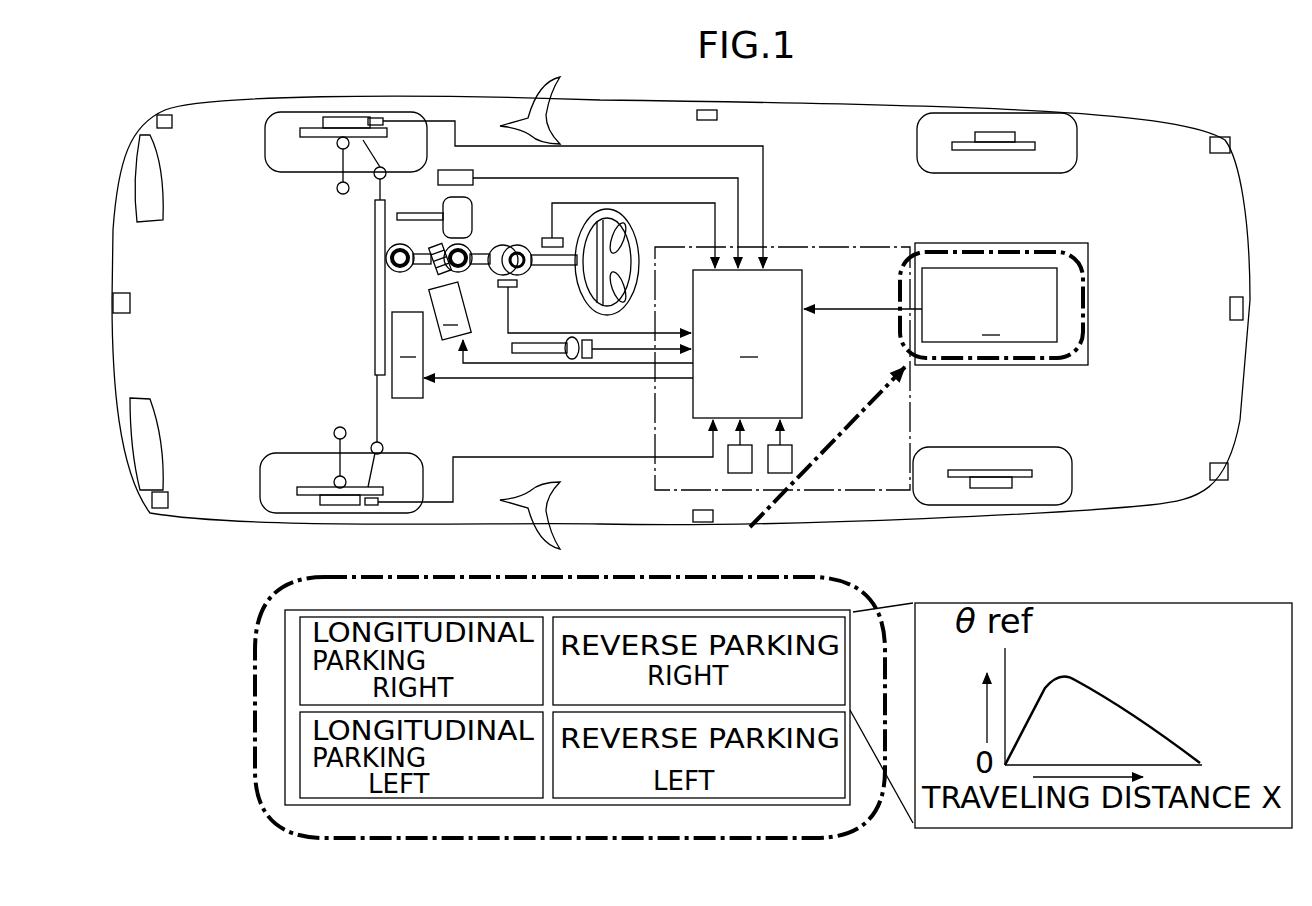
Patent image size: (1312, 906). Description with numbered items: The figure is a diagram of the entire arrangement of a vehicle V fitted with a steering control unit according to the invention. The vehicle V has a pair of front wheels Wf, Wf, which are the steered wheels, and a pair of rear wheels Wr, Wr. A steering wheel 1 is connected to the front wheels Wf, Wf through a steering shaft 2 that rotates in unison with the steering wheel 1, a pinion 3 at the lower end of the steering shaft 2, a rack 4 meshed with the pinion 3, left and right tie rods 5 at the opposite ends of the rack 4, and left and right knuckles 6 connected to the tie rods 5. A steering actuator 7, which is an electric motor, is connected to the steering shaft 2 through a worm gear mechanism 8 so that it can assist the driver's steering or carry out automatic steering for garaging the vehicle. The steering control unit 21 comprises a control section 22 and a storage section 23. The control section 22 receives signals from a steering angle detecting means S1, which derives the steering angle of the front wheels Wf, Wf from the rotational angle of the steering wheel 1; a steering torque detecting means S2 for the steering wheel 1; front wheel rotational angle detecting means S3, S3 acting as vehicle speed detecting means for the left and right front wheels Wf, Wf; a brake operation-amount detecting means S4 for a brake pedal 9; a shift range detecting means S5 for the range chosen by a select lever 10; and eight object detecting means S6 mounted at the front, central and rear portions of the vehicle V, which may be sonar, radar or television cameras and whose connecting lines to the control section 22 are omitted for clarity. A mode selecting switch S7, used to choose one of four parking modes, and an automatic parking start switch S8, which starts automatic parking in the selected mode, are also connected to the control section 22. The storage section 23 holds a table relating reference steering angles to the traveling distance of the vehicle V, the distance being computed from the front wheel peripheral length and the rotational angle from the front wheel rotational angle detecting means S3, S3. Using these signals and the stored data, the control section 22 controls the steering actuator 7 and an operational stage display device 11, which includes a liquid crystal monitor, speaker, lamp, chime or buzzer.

The steering wheel 1 is at (633, 237).
The steering shaft 2 is at (547, 265).
The pinion 3 is at (387, 250).
The rack 4 is at (374, 300).
The tie rods 5 is at (388, 190).
The knuckles 6 is at (363, 143).
The steering actuator 7 is at (561, 322).
The worm gear mechanism 8 is at (425, 278).
The brake pedal 9 is at (472, 223).
The select lever 10 is at (570, 358).
The operational stage display device 11 is at (542, 355).
The steering control unit 21 is at (1088, 337).
The control section 22 is at (782, 368).
The storage section 23 is at (943, 305).
The steering angle detecting means S1 is at (542, 240).
The steering torque detecting means S2 is at (503, 287).
The front wheel rotational angle detecting means S3 is at (376, 117).
The brake operation-amount detecting means S4 is at (467, 173).
The shift range detecting means S5 is at (587, 359).
The object detecting means S6 is at (172, 125).
The mode selecting switch S7 is at (735, 463).
The automatic parking start switch S8 is at (777, 465).
The front wheels Wf is at (280, 163).
The rear wheels Wr is at (1068, 152).
The vehicle V is at (230, 527).